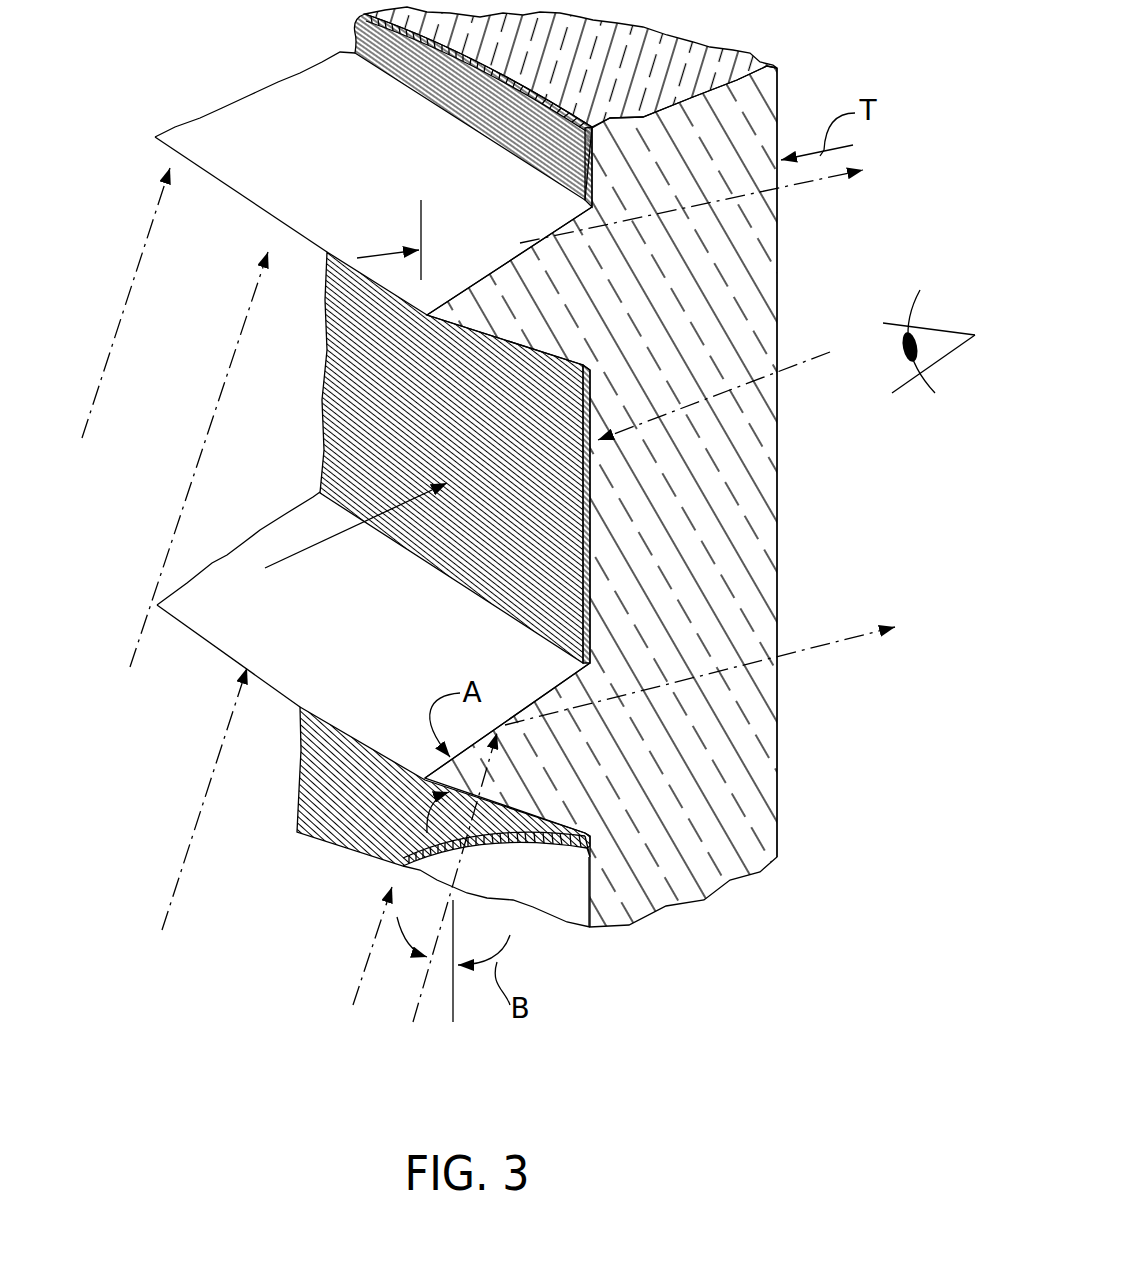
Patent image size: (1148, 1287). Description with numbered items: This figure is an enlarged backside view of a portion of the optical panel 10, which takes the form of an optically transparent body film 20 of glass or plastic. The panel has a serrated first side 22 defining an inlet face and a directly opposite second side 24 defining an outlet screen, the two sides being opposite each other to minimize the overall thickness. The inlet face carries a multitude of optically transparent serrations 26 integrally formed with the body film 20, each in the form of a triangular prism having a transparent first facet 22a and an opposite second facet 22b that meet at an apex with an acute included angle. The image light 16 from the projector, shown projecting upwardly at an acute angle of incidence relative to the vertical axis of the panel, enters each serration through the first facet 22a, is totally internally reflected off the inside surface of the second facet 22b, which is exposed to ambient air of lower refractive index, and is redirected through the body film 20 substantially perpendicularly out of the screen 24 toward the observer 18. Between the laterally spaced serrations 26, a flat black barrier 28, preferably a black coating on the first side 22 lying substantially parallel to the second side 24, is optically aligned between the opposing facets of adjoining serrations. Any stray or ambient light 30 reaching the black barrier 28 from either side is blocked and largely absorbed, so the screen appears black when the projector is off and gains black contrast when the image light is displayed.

The optical panel 10 is at (782, 625).
The image light 16 is at (188, 853).
The observer 18 is at (947, 330).
The body film 20 is at (673, 531).
The first side 22 is at (531, 886).
The first facet 22a is at (568, 824).
The second facet 22b is at (364, 648).
The second side 24 is at (779, 263).
The serrations 26 is at (527, 305).
The black barrier 28 is at (358, 399).
The stray or ambient light 30 is at (345, 533).